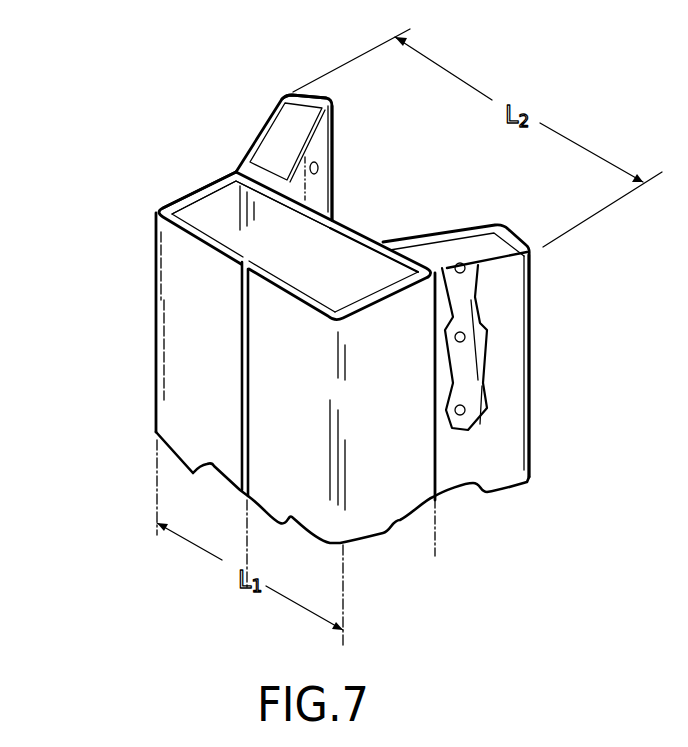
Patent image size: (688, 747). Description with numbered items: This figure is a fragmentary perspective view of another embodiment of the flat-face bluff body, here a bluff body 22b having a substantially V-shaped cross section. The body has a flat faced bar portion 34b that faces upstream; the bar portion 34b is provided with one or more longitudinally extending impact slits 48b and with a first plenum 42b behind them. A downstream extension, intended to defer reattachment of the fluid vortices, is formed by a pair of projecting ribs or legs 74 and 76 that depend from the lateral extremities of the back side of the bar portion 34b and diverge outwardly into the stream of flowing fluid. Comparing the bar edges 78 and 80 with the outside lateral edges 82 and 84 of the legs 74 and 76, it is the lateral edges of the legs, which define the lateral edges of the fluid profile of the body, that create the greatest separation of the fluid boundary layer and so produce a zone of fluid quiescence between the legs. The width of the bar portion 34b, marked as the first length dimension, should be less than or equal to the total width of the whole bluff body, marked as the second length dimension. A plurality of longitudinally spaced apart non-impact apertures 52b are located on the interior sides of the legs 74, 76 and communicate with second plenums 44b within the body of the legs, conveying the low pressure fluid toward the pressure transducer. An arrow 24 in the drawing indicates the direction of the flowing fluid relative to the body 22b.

The bluff body 22b is at (143, 183).
The flat faced bar portion 34b is at (192, 180).
The second plenums 44b is at (267, 138).
The outside lateral edge 82 is at (283, 98).
The leg 74 is at (324, 137).
The non-impact apertures 52b is at (319, 168).
The first plenum 42b is at (312, 246).
The leg 76 is at (507, 293).
The outside lateral edge 84 is at (530, 389).
The bar edge 78 is at (157, 292).
The impact slits 48b is at (242, 374).
The direction arrow 24 is at (200, 449).
The bar edge 80 is at (343, 437).